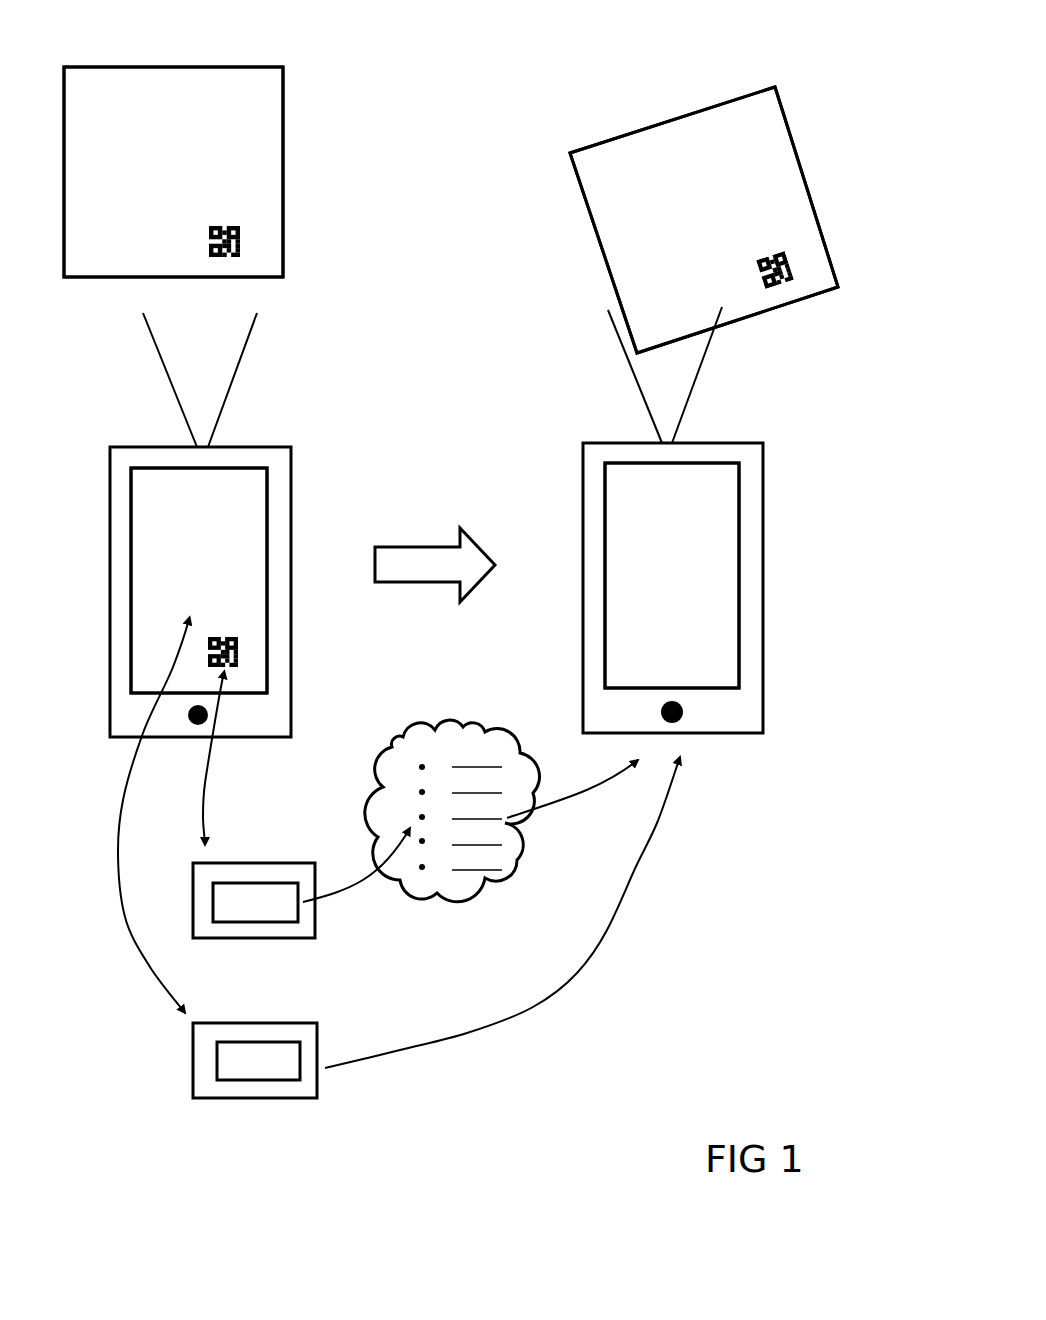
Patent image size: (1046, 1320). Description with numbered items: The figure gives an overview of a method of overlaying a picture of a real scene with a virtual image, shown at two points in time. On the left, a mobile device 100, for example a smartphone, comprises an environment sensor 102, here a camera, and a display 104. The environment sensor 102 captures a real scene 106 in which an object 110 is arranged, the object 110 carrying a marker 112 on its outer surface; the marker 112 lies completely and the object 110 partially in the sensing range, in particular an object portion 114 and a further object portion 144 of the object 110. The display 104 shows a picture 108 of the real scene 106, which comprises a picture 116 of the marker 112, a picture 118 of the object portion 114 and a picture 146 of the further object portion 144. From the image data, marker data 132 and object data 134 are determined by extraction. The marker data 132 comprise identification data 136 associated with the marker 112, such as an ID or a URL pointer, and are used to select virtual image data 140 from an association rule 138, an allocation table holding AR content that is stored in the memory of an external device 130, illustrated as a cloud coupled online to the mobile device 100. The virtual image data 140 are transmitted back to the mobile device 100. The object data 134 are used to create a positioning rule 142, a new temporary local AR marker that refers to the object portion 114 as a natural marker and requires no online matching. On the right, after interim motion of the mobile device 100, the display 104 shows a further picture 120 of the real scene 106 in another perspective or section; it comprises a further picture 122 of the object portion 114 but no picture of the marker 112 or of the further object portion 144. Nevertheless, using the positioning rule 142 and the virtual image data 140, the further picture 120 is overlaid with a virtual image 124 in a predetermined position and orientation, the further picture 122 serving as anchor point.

The mobile device 100 is at (280, 447).
The environment sensor 102 is at (197, 447).
The display 104 is at (262, 577).
The real scene 106 is at (250, 31).
The picture 108 is at (200, 523).
The object 110 is at (277, 143).
The marker 112 is at (240, 230).
The object portion 114 is at (140, 163).
The picture of the marker 116 is at (237, 645).
The picture of the object portion 118 is at (170, 567).
The further picture 120 is at (665, 672).
The further picture of the object portion 122 is at (713, 597).
The virtual image 124 is at (650, 493).
The external device 130 is at (473, 718).
The marker data 132 is at (216, 862).
The object data 134 is at (223, 1022).
The identification data 136 is at (270, 883).
The association rule 138 is at (453, 757).
The virtual image data 140 is at (597, 795).
The positioning rule 142 is at (273, 1042).
The further object portion 144 is at (233, 107).
The picture of the further object portion 146 is at (247, 510).